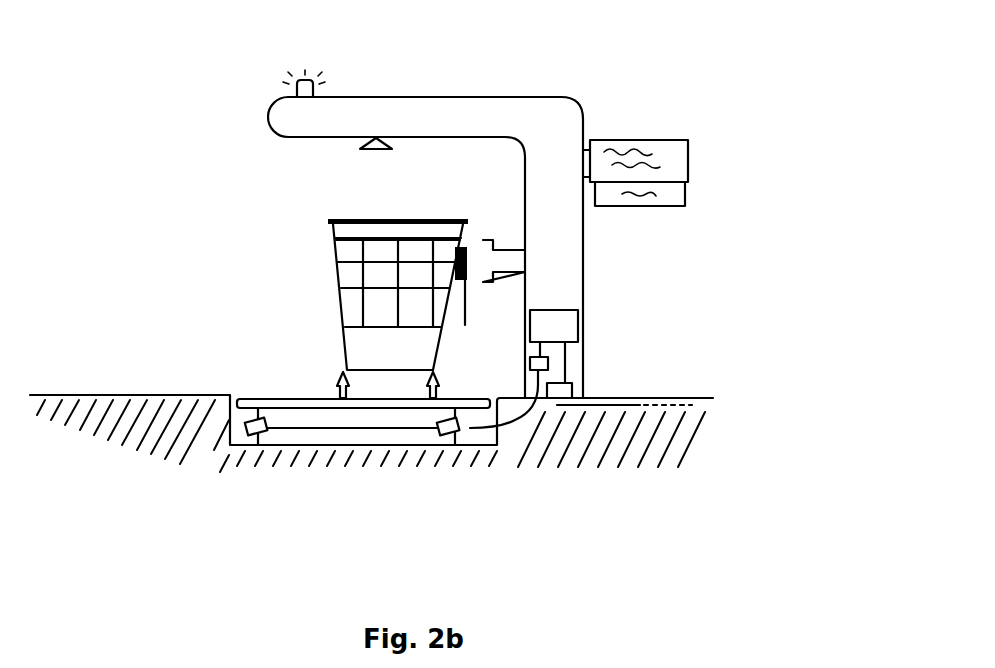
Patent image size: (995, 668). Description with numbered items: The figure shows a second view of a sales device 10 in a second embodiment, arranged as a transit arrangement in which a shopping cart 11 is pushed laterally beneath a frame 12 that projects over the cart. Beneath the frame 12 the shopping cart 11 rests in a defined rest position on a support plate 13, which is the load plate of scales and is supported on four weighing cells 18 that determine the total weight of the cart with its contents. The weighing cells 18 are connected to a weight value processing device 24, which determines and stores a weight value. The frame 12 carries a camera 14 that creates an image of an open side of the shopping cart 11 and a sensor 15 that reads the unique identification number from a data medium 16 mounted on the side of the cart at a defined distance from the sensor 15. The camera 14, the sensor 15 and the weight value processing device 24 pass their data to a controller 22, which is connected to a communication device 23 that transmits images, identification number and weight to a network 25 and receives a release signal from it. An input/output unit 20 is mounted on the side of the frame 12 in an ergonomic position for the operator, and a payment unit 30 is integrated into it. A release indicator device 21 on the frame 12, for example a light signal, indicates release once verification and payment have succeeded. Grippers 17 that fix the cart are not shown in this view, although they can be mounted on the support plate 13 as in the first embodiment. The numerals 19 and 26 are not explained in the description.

The sales device 10 is at (128, 141).
The shopping cart 11 is at (388, 385).
The frame 12 is at (452, 97).
The support plate 13 is at (267, 395).
The camera 14 is at (392, 150).
The sensor 15 is at (497, 243).
The data medium 16 is at (469, 306).
The grippers 17 is at (330, 255).
The weighing cells 18 is at (240, 440).
The base bar 19 is at (296, 433).
The input/output unit 20 is at (690, 140).
The release indicator device 21 is at (316, 74).
The controller 22 is at (578, 325).
The communication device 23 is at (575, 390).
The weight value processing device 24 is at (527, 357).
The network 25 is at (640, 400).
The sensors 26 is at (350, 448).
The payment unit 30 is at (660, 200).